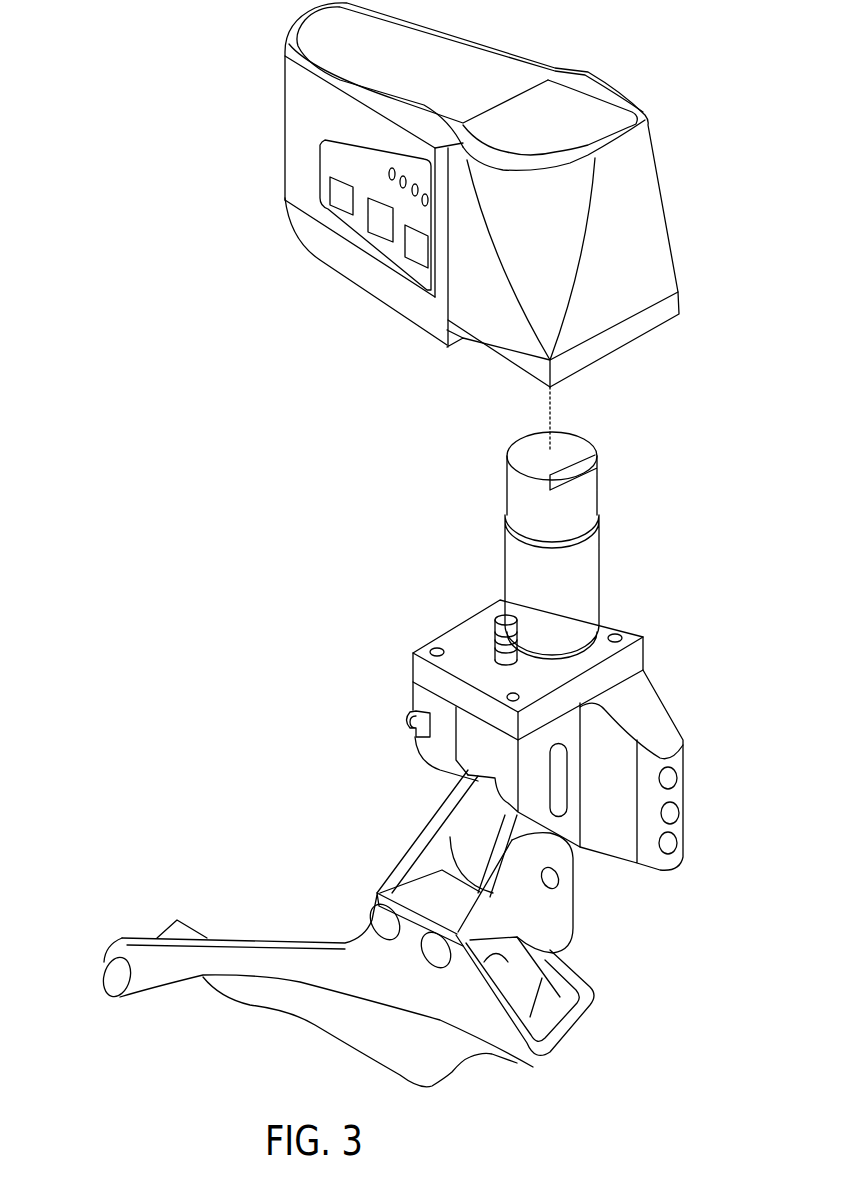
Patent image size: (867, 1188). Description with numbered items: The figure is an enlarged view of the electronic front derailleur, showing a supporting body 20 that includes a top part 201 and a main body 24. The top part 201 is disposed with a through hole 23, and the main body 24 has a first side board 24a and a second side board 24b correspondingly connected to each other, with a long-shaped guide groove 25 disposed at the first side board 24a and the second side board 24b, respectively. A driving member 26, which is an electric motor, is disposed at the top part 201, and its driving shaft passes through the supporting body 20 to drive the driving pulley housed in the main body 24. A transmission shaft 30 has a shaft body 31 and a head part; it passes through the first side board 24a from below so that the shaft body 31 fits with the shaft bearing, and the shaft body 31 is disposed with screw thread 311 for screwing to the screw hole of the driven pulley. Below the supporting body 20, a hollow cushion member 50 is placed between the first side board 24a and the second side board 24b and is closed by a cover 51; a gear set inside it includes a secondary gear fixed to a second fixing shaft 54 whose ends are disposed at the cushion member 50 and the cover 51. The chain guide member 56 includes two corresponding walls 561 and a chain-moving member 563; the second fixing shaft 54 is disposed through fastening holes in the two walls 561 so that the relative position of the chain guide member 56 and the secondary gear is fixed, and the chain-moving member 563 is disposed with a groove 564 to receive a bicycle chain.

The supporting body 20 is at (558, 647).
The top part 201 is at (617, 627).
The through hole 23 is at (490, 657).
The main body 24 is at (527, 755).
The first side board 24a is at (668, 766).
The second side board 24b is at (441, 754).
The long-shaped guide groove 25 is at (630, 812).
The driving member 26 is at (580, 567).
The transmission shaft 30 is at (473, 601).
The shaft body 31 is at (495, 618).
The screw thread 311 is at (495, 658).
The cushion member 50 is at (470, 818).
The cover 51 is at (508, 843).
The second fixing shaft 54 is at (550, 882).
The chain guide member 56 is at (467, 951).
The walls 561 is at (568, 893).
The chain-moving member 563 is at (234, 957).
The groove 564 is at (555, 1023).